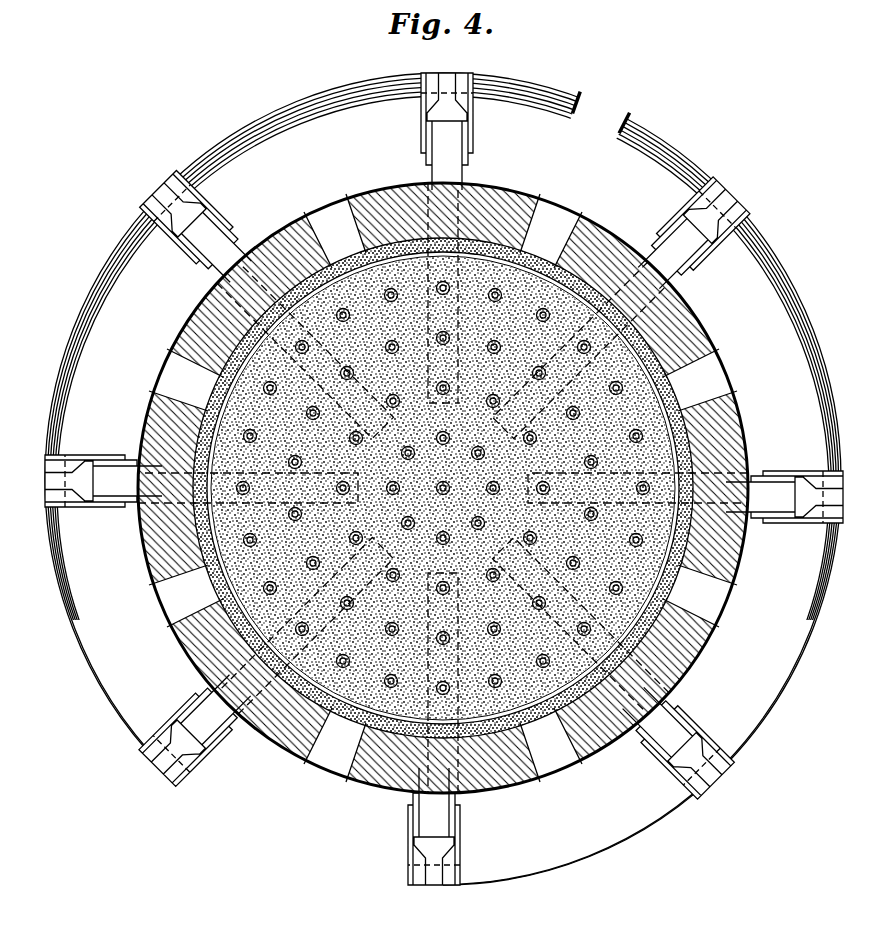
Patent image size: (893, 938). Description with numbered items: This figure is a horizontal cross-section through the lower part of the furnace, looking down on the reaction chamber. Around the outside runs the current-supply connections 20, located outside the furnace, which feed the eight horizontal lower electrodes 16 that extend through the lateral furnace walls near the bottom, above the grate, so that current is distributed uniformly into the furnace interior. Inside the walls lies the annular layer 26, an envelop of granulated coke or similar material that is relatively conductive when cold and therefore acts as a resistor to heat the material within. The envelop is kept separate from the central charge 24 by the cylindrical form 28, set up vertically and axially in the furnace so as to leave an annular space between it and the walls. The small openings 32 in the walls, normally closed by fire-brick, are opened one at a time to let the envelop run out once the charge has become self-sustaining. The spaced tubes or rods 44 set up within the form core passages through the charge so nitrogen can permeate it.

The lower electrodes 16 is at (428, 803).
The connections 20 is at (808, 605).
The charge 24 is at (318, 300).
The layer 26 is at (682, 543).
The cylindrical form 28 is at (640, 344).
The small openings 32 is at (557, 770).
The tubes or rods 44 is at (340, 664).